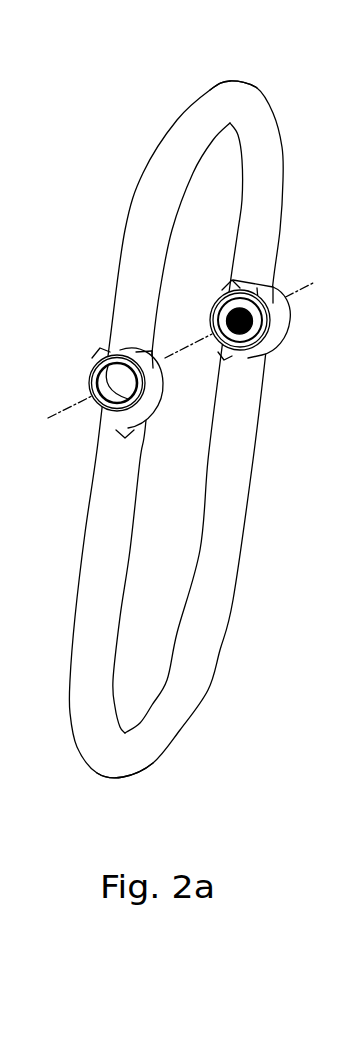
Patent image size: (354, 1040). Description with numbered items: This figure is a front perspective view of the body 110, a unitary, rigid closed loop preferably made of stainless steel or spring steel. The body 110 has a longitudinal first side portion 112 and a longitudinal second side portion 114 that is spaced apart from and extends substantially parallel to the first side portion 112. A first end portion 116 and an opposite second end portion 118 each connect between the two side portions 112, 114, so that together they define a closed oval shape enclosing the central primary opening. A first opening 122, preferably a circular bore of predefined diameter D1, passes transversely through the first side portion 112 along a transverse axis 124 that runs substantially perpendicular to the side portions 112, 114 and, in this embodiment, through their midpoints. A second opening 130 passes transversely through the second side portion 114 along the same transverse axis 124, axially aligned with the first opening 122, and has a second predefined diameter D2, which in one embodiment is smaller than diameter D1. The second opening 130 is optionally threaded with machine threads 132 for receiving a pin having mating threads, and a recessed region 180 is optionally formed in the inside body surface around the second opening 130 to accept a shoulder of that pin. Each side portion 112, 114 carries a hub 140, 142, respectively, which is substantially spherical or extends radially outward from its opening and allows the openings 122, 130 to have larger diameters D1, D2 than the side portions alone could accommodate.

The body 110 is at (264, 75).
The longitudinal first side portion 112 is at (113, 505).
The longitudinal second side portion 114 is at (235, 488).
The first end portion 116 is at (217, 98).
The second end portion 118 is at (132, 752).
The first opening 122 is at (108, 383).
The transverse axis 124 is at (63, 421).
The second opening 130 is at (229, 334).
The machine threads 132 is at (230, 311).
The hub 140 is at (153, 385).
The hub 142 is at (278, 320).
The recessed region 180 is at (244, 343).
The first opening diameter D1 is at (98, 367).
The second opening diameter D2 is at (253, 335).